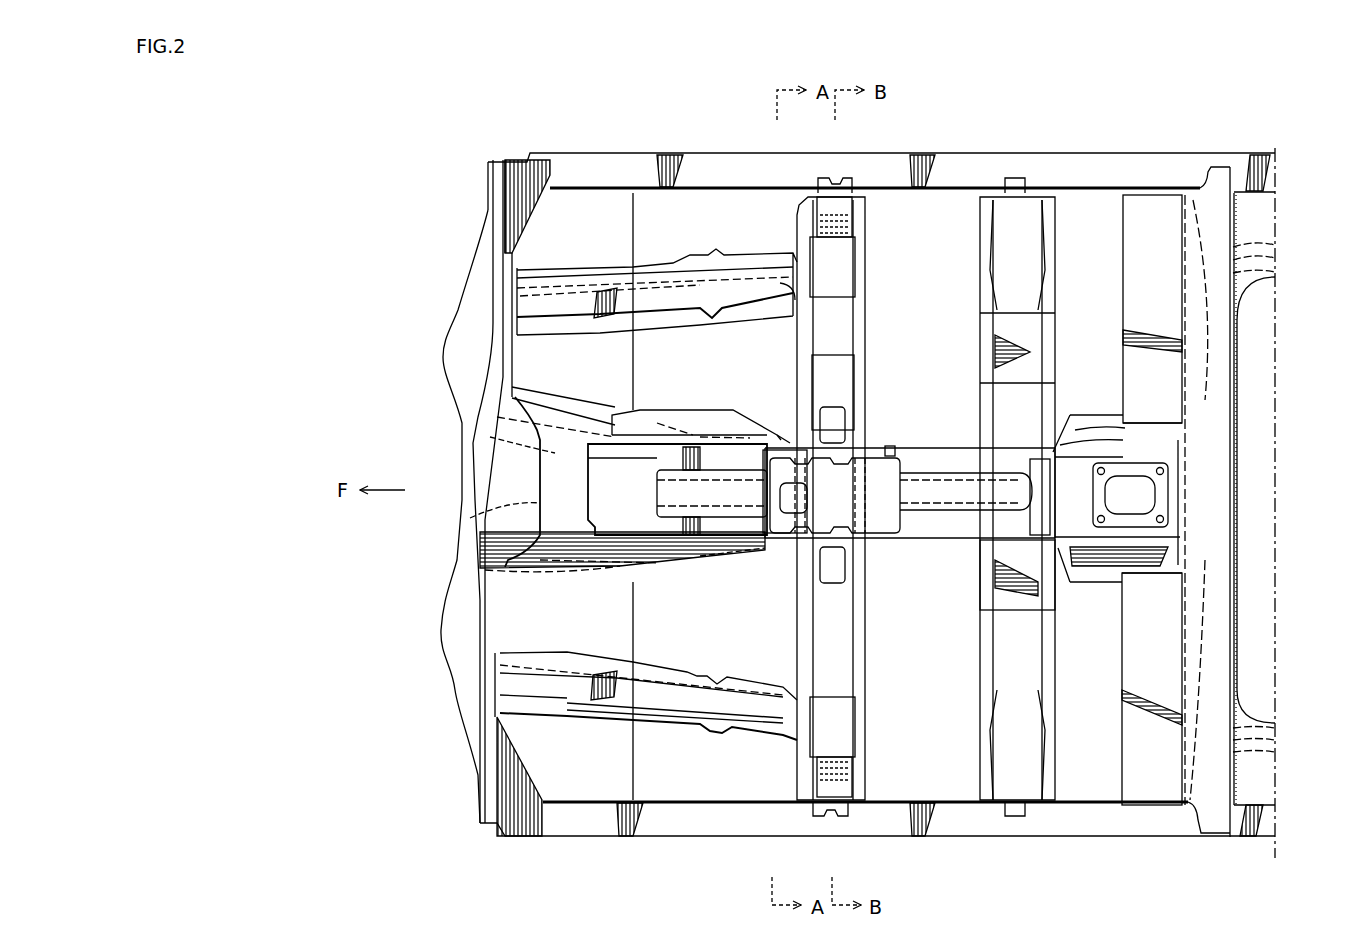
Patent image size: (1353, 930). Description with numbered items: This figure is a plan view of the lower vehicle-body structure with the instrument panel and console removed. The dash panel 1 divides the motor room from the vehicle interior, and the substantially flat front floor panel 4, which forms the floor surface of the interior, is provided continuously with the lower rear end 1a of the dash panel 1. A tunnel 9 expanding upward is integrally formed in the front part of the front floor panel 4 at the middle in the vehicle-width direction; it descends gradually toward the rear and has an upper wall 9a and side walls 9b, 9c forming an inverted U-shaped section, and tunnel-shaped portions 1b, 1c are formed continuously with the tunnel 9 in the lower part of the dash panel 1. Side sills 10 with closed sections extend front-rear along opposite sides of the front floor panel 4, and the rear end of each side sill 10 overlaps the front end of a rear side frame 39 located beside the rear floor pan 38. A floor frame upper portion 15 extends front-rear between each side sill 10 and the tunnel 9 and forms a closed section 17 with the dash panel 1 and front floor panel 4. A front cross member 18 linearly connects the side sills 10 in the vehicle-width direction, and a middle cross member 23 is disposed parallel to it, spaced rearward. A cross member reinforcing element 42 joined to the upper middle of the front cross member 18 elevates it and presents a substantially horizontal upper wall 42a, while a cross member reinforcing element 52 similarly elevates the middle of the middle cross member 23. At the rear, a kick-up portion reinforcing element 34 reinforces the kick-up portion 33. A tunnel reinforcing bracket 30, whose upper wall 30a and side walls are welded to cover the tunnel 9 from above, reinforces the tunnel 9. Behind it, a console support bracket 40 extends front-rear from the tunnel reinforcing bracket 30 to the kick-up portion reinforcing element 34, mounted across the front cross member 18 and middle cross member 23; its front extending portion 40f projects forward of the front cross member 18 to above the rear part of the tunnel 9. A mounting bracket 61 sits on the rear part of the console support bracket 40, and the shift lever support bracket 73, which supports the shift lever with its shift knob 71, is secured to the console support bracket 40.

The dash panel 1 is at (468, 593).
The lower rear end 1a is at (620, 634).
The tunnel-shaped portion 1b is at (495, 458).
The tunnel-shaped portion 1c is at (490, 515).
The front floor panel 4 is at (900, 634).
The tunnel 9 is at (680, 415).
The upper wall 9a is at (740, 563).
The side wall 9b is at (665, 565).
The side wall 9c is at (675, 416).
The side sill 10 is at (740, 152).
The floor frame upper portion 15 is at (598, 262).
The closed section 17 is at (668, 292).
The front cross member 18 is at (874, 348).
The middle cross member 23 is at (1068, 328).
The tunnel reinforcing bracket 30 is at (648, 438).
The upper wall 30a is at (640, 498).
The kick-up portion 33 is at (1192, 275).
The kick-up portion reinforcing element 34 is at (1092, 582).
The rear floor pan 38 is at (1260, 413).
The rear side frame 39 is at (1262, 216).
The console support bracket 40 is at (935, 450).
The front extending portion 40f is at (777, 435).
The cross member reinforcing element 42 is at (810, 412).
The upper wall 42a is at (838, 566).
The cross member reinforcing element 52 is at (985, 563).
The mounting bracket 61 is at (1044, 513).
The shift knob 71 is at (783, 522).
The shift lever support bracket 73 is at (890, 452).